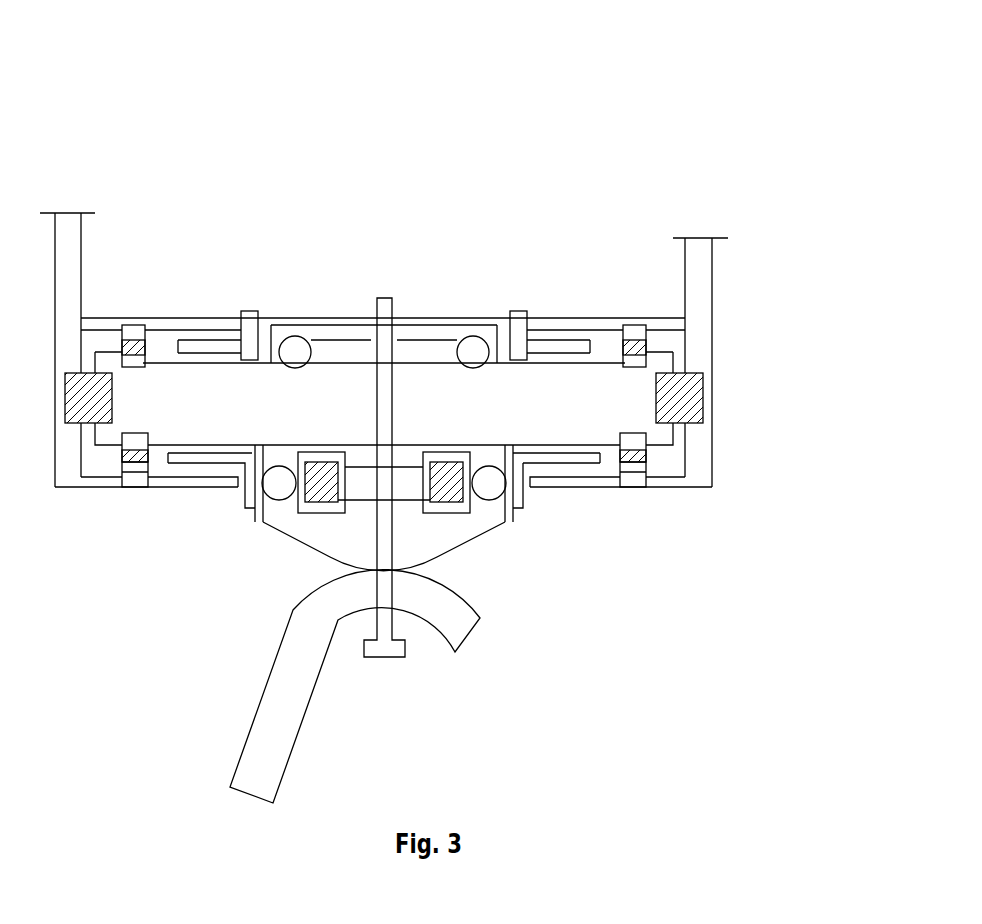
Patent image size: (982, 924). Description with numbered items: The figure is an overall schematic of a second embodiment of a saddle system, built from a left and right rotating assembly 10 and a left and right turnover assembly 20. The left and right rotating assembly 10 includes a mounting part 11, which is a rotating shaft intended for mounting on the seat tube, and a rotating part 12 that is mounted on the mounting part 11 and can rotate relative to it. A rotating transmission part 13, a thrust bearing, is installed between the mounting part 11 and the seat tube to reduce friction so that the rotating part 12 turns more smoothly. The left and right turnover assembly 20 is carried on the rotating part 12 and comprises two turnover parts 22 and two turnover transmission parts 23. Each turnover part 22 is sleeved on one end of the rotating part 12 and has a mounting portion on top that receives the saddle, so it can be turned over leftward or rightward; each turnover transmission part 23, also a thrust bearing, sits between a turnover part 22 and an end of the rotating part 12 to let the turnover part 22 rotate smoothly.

The left and right rotating assembly 10 is at (785, 502).
The mounting part 11 is at (417, 527).
The rotating part 12 is at (313, 423).
The rotating transmission part 13 is at (515, 486).
The left and right turnover assembly 20 is at (457, 100).
The turnover part 22 is at (68, 340).
The turnover transmission part 23 is at (88, 368).